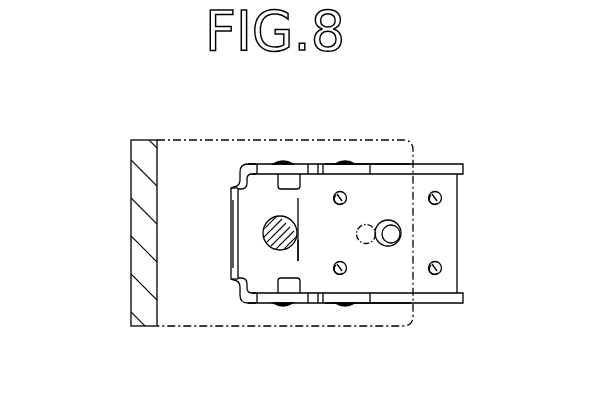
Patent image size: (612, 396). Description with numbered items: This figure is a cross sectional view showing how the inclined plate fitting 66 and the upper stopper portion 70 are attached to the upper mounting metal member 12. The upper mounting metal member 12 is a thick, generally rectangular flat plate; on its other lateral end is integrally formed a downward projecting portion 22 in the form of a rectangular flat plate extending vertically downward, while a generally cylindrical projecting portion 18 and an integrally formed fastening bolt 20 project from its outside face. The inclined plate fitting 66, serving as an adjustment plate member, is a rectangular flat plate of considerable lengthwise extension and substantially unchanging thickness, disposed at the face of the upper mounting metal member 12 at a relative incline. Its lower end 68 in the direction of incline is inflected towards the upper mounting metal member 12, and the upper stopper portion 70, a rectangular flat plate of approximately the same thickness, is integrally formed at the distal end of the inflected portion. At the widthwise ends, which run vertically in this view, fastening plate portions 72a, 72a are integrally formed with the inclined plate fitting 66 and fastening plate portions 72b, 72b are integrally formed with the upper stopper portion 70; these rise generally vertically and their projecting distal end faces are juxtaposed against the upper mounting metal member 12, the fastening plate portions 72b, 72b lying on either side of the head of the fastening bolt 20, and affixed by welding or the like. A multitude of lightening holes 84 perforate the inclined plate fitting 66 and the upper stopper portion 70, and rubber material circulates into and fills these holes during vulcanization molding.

The upper mounting metal member 12 is at (194, 178).
The projecting portion 18 is at (399, 179).
The fastening bolt 20 is at (267, 216).
The downward projecting portion 22 is at (137, 238).
The inclined plate fitting 66 is at (437, 235).
The lower end 68 is at (300, 253).
The upper stopper portion 70 is at (262, 263).
The fastening plate portions 72a is at (387, 170).
The fastening plate portions 72b is at (307, 168).
The lightening holes 84 is at (285, 177).